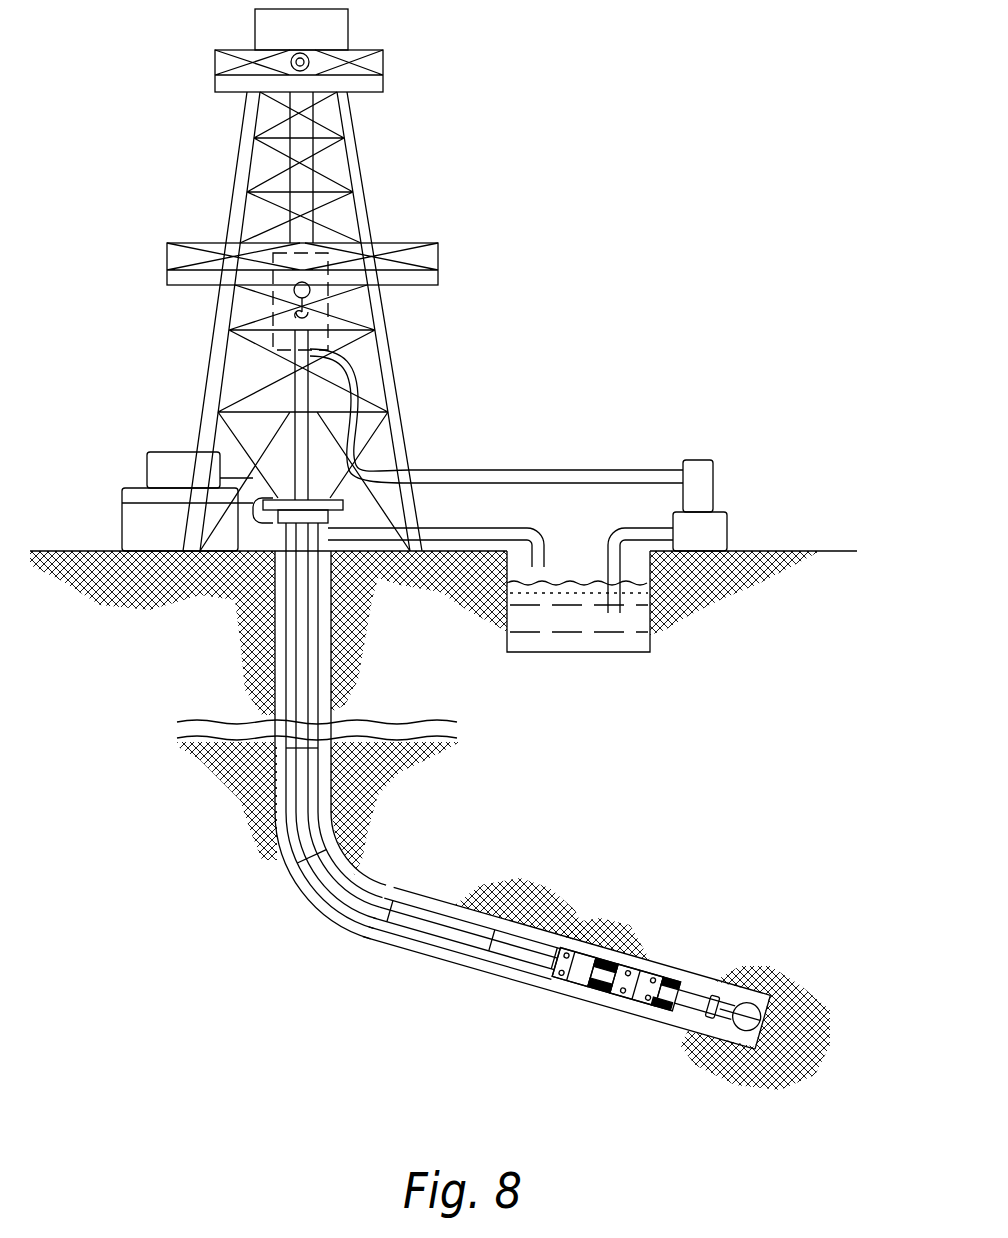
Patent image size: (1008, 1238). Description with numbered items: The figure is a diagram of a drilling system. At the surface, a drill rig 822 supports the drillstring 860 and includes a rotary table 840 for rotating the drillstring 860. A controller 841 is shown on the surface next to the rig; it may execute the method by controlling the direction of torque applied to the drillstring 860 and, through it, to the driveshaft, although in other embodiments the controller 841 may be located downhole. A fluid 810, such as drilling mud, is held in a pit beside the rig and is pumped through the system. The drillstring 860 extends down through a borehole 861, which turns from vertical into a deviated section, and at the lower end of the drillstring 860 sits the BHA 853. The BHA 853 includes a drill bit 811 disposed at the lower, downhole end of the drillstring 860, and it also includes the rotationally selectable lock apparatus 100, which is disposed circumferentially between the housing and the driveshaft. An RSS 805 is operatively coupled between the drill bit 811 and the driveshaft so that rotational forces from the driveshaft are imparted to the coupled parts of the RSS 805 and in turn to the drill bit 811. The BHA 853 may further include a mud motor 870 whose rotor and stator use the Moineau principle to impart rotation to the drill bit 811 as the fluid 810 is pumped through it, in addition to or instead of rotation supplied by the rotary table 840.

The drill rig 822 is at (234, 143).
The controller 841 is at (167, 450).
The rotary table 840 is at (122, 503).
The borehole 861 is at (337, 565).
The fluid 810 is at (610, 640).
The drillstring 860 is at (426, 882).
The BHA 853 is at (718, 1008).
The mud motor 870 is at (585, 970).
The RSS 805 is at (645, 987).
The drill bit 811 is at (762, 1022).
The rotationally selectable lock apparatus 100 is at (659, 1019).